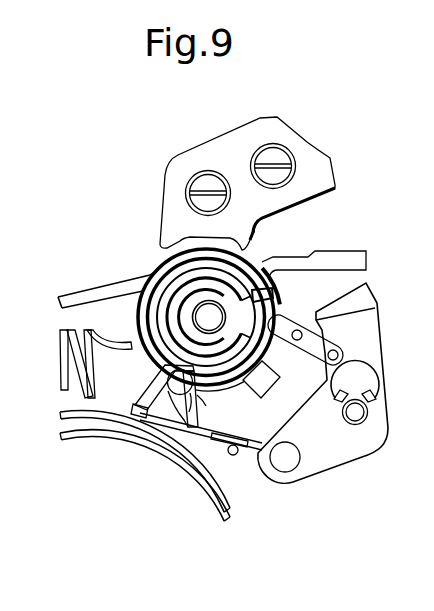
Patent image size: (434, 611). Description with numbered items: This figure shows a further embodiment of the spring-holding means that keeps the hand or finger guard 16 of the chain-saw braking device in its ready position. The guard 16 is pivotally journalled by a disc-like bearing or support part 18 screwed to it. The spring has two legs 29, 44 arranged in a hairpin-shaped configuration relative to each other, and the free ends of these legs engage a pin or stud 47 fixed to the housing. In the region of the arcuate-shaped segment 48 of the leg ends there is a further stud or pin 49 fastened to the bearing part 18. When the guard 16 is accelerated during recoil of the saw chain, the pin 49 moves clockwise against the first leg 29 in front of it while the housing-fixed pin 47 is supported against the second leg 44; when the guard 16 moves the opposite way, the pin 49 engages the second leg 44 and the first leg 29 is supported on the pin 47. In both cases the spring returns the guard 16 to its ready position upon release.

The hand or finger guard 16 is at (307, 148).
The bearing or support part 18 is at (250, 266).
The arcuate-shaped segment 48 is at (163, 370).
The pin or stud fixed to the housing 47 is at (168, 413).
The second leg 44 is at (192, 428).
The stud or pin fastened to the bearing part 49 is at (203, 397).
The first leg 29 is at (132, 408).